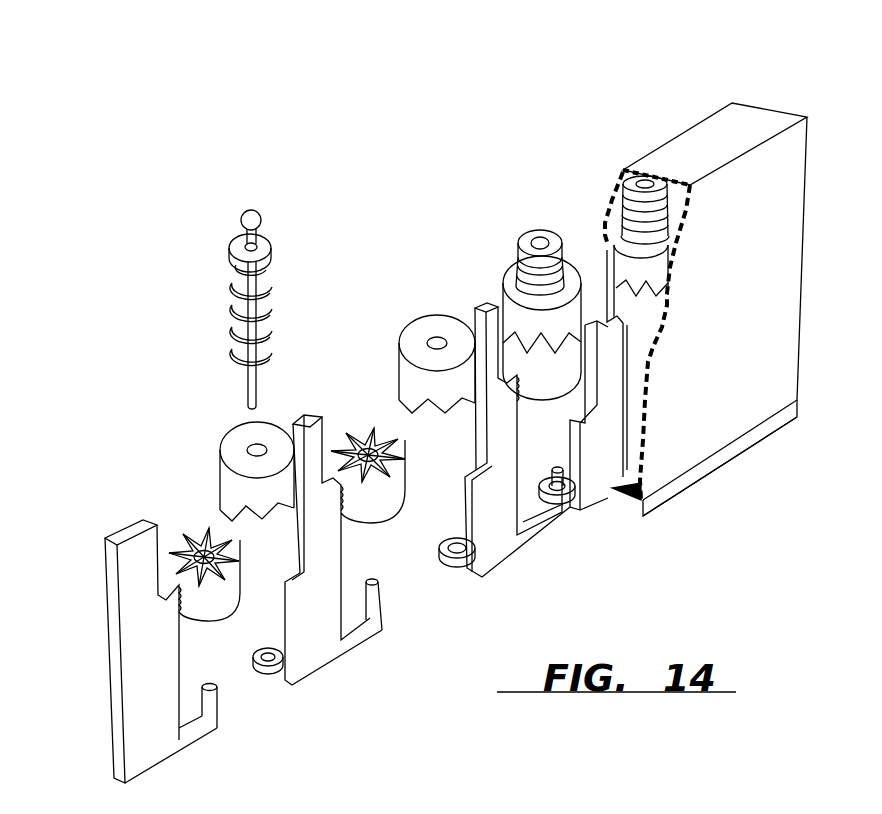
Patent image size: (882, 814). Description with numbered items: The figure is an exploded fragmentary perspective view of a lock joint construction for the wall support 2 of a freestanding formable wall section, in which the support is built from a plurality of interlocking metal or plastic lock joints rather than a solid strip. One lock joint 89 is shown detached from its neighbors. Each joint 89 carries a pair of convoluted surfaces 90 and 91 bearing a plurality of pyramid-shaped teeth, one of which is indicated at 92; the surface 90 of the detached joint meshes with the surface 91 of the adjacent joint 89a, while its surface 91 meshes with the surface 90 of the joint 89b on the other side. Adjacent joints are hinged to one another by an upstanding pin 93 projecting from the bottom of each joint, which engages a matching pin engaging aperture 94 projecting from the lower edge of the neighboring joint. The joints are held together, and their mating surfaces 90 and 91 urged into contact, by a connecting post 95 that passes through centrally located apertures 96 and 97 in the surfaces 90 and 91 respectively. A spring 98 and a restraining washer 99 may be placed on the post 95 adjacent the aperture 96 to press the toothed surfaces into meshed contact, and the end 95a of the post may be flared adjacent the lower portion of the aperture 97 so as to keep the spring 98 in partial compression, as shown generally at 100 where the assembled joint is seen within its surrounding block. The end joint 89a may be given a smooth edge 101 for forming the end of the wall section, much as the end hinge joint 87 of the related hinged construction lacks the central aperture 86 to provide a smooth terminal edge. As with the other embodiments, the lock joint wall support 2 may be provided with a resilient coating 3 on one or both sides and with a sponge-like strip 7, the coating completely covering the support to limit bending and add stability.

The wall support 2 is at (706, 120).
The resilient coating 3 is at (818, 130).
The sponge-like strip 7 is at (703, 478).
The central aperture 86 is at (322, 6).
The end hinge joint 87 is at (245, 0).
The lock joint 89 is at (234, 455).
The adjacent lock joint 89a is at (127, 637).
The lock joint 89b is at (478, 305).
The convoluted surface 90 is at (263, 522).
The convoluted surface 91 is at (186, 532).
The pyramid-shaped tooth 92 is at (402, 472).
The upstanding pin 93 is at (378, 600).
The pin engaging aperture 94 is at (457, 552).
The connecting post 95 is at (262, 215).
The post end 95a is at (265, 388).
The central aperture 96 is at (250, 446).
The central aperture 97 is at (366, 440).
The spring 98 is at (272, 296).
The restraining washer 99 is at (270, 246).
The assembled joint with compressed spring 100 is at (568, 250).
The smooth edge 101 is at (113, 660).